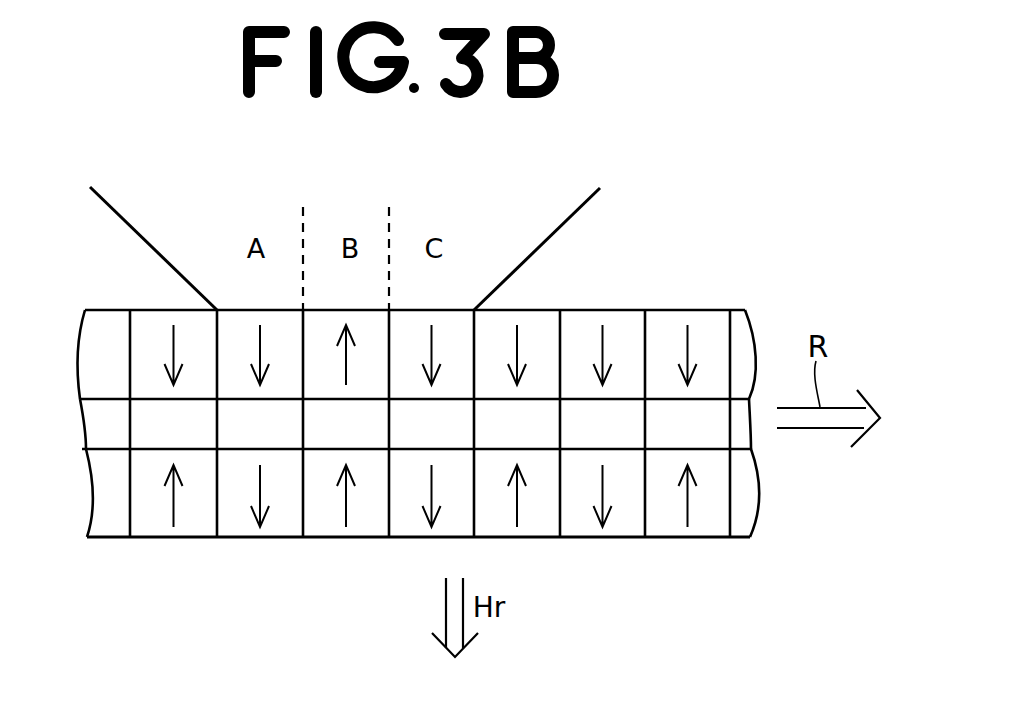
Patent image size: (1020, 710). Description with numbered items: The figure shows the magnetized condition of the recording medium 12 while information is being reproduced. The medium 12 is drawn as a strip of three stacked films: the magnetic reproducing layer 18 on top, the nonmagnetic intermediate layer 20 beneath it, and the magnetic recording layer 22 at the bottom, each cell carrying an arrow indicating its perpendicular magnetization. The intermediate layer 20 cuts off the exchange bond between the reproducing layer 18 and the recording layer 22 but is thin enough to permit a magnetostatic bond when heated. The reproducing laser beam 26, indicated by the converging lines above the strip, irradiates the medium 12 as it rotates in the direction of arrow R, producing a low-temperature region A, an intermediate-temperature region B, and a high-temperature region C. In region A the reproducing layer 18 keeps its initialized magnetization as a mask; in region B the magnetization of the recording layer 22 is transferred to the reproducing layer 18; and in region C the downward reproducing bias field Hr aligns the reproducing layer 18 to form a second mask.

The recording medium 12 is at (463, 412).
The magnetic reproducing layer 18 is at (746, 322).
The nonmagnetic intermediate layer 20 is at (748, 433).
The magnetic recording layer 22 is at (745, 518).
The reproducing laser beam 26 is at (573, 213).